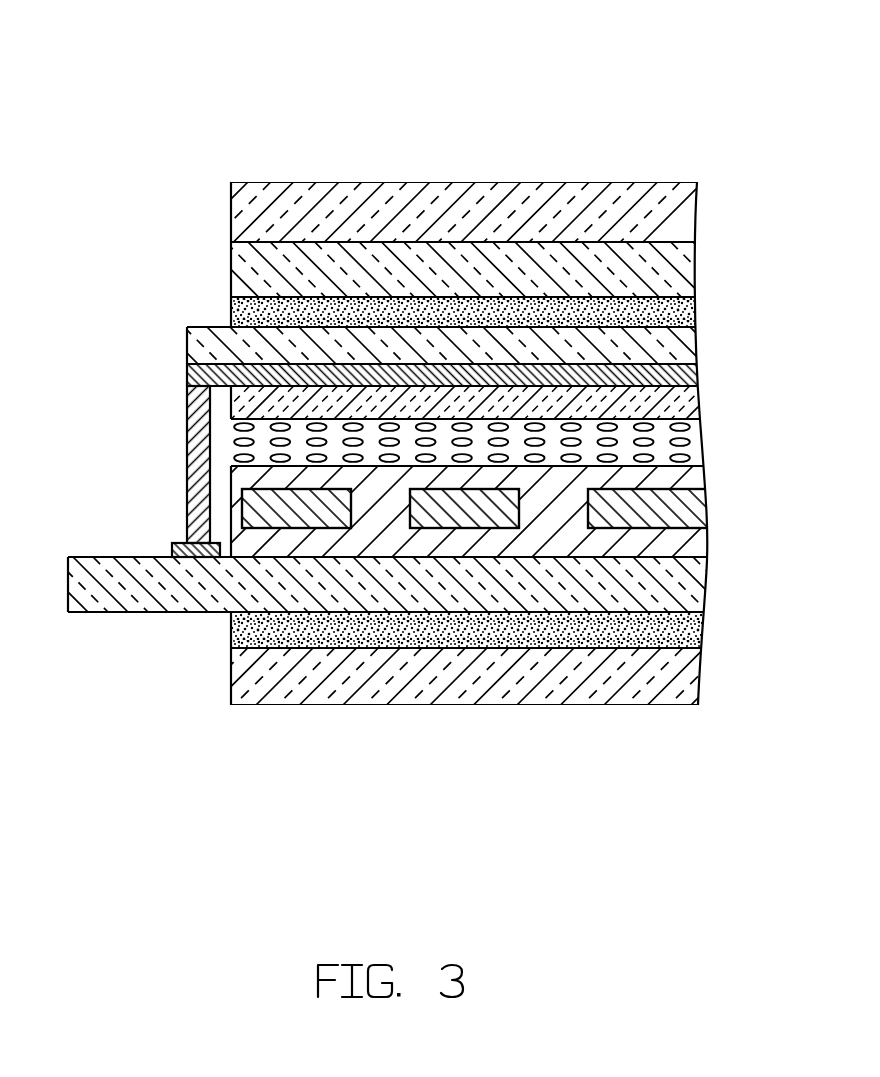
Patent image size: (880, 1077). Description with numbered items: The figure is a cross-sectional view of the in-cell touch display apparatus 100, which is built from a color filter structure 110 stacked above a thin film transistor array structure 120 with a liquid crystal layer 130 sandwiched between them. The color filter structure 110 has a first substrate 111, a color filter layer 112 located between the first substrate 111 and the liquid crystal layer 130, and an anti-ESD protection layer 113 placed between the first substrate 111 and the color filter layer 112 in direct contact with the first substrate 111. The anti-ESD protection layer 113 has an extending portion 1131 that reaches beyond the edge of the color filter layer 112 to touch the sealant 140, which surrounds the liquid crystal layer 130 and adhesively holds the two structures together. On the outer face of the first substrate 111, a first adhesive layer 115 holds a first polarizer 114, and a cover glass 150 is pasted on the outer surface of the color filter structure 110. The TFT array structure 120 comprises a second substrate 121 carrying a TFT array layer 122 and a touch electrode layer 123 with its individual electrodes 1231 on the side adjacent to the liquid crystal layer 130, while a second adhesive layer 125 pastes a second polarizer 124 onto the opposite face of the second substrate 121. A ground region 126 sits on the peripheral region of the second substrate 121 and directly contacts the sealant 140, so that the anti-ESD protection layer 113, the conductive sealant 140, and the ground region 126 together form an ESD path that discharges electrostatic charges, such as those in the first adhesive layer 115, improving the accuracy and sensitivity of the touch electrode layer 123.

The in-cell touch display apparatus 100 is at (413, 31).
The color filter structure 110 is at (437, 263).
The first substrate 111 is at (208, 340).
The color filter layer 112 is at (267, 373).
The anti-ESD protection layer 113 is at (247, 408).
The extending portion 1131 is at (198, 380).
The first polarizer 114 is at (437, 263).
The first adhesive layer 115 is at (232, 310).
The thin film transistor (TFT) array structure 120 is at (399, 643).
The second substrate 121 is at (97, 592).
The TFT array layer 122 is at (240, 550).
The touch electrode layer 123 is at (476, 654).
The pixel electrode 1231 is at (304, 516).
The second polarizer 124 is at (243, 685).
The second adhesive layer 125 is at (674, 628).
The ground region 126 is at (178, 552).
The liquid crystal layer 130 is at (687, 433).
The sealant 140 is at (198, 498).
The cover glass 150 is at (530, 203).